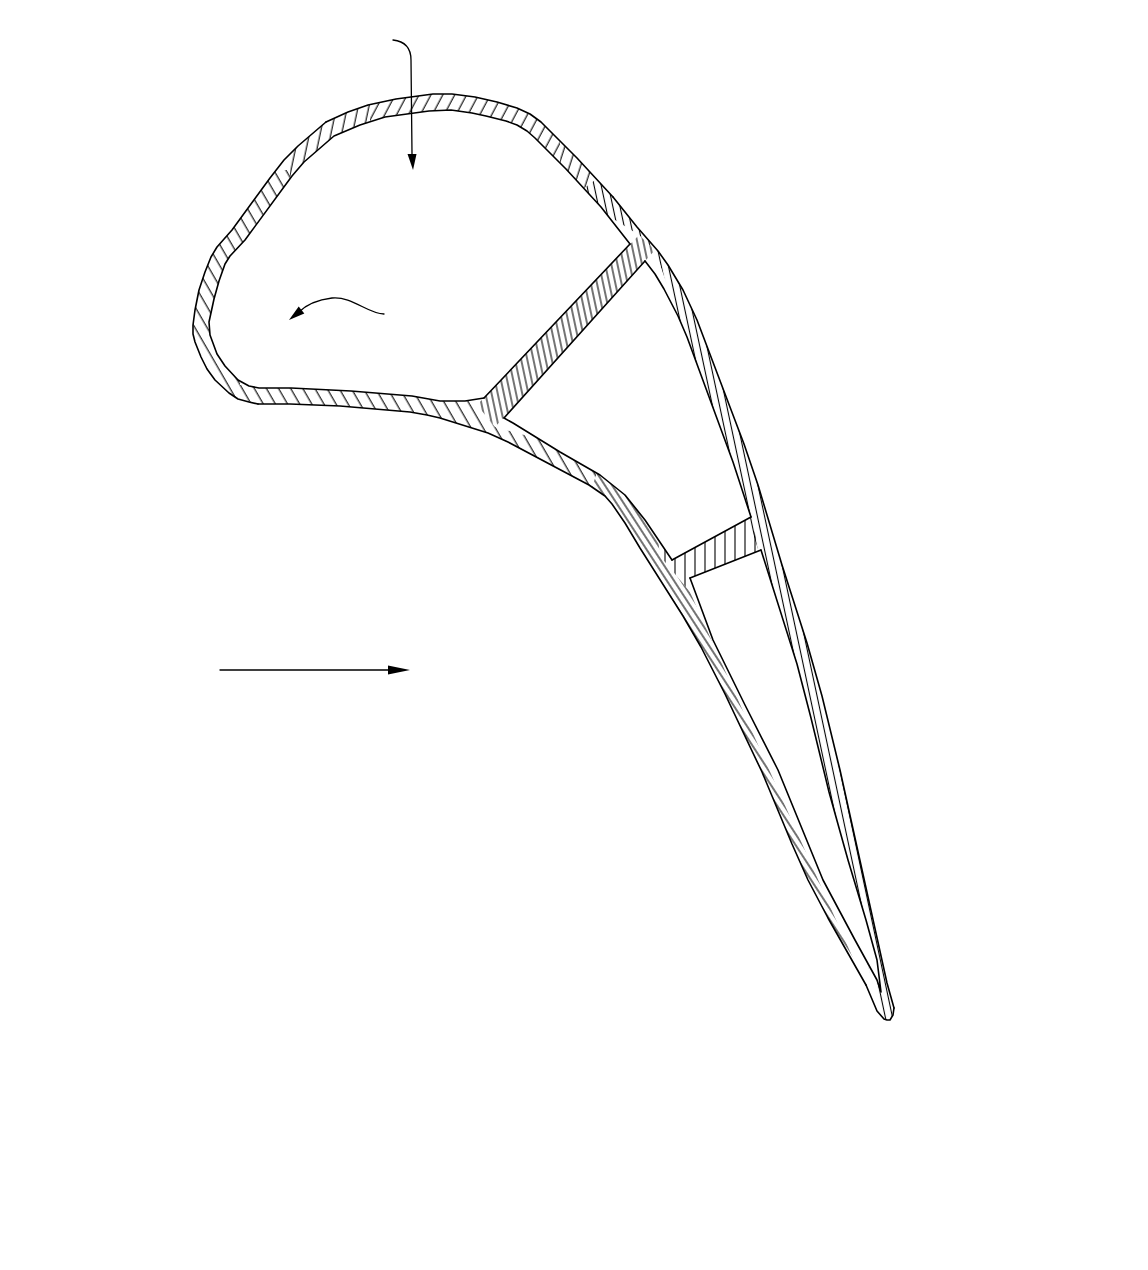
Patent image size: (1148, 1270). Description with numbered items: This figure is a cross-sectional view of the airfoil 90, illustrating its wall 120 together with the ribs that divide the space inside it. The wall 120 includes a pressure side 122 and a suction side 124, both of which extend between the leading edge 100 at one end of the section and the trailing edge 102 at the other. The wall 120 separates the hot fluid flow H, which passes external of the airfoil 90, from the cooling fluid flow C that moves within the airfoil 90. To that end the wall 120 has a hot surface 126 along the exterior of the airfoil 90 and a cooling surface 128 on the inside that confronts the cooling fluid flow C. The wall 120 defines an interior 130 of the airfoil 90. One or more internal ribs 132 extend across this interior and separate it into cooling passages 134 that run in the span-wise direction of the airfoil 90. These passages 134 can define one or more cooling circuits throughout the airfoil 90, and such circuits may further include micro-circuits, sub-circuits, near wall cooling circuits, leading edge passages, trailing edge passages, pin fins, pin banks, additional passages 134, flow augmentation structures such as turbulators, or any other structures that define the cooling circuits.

The airfoil 90 is at (246, 83).
The leading edge 100 is at (205, 372).
The trailing edge 102 is at (889, 1025).
The wall 120 is at (540, 96).
The pressure side 122 is at (632, 543).
The suction side 124 is at (685, 290).
The hot surface 126 is at (460, 95).
The cooling surface 128 is at (540, 150).
The interior 130 is at (379, 97).
The internal rib 132 is at (555, 318).
The cooling passage 134 is at (405, 268).
The cooling fluid flow C is at (348, 316).
The hot fluid flow H is at (308, 670).